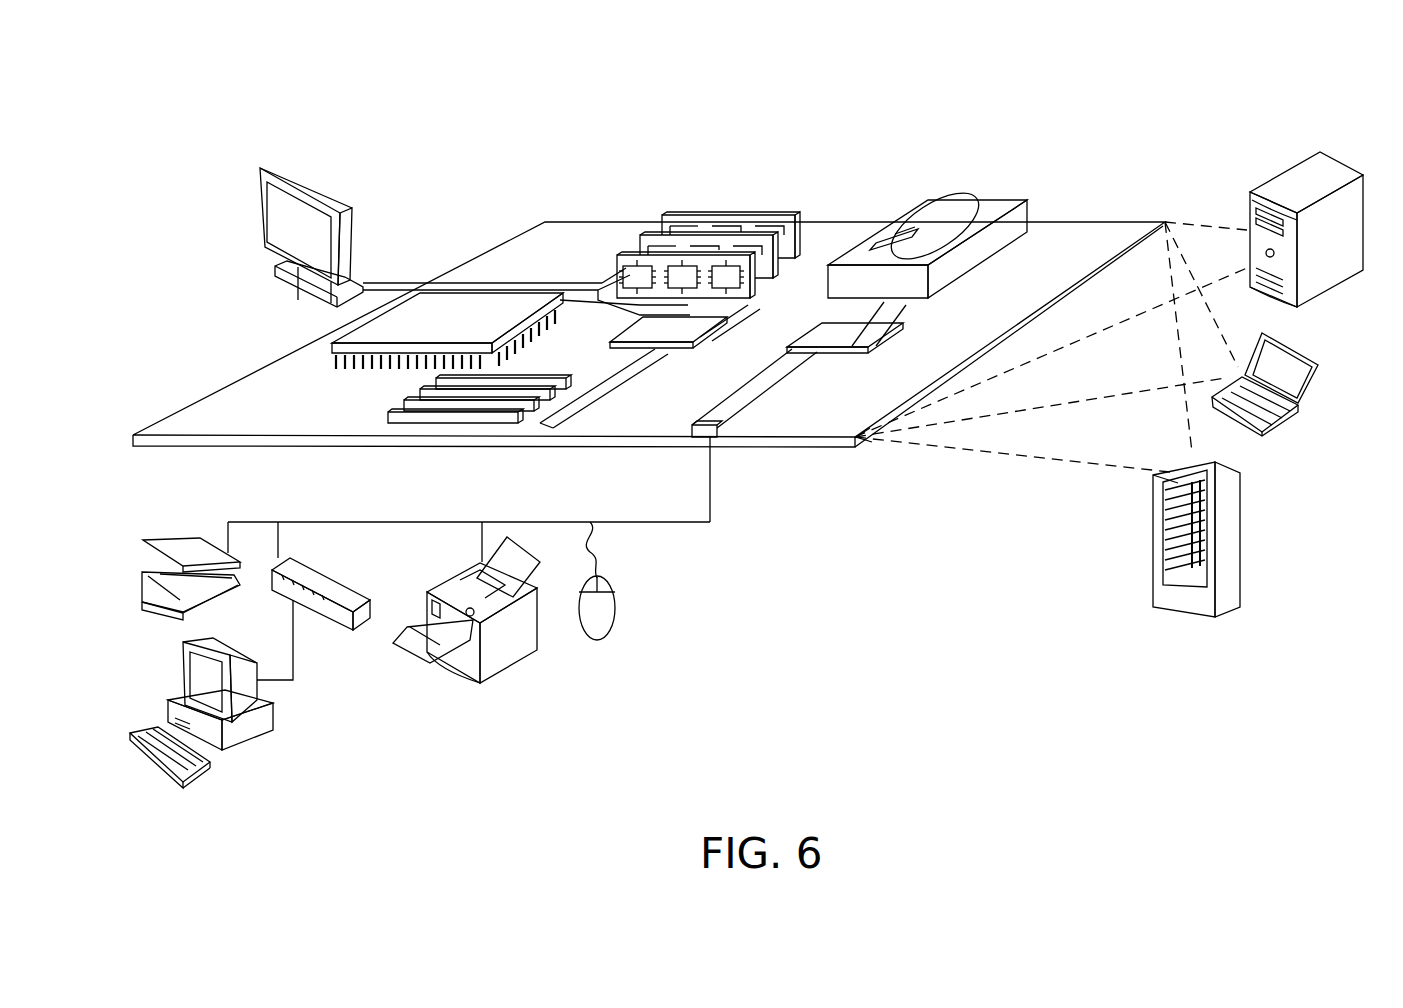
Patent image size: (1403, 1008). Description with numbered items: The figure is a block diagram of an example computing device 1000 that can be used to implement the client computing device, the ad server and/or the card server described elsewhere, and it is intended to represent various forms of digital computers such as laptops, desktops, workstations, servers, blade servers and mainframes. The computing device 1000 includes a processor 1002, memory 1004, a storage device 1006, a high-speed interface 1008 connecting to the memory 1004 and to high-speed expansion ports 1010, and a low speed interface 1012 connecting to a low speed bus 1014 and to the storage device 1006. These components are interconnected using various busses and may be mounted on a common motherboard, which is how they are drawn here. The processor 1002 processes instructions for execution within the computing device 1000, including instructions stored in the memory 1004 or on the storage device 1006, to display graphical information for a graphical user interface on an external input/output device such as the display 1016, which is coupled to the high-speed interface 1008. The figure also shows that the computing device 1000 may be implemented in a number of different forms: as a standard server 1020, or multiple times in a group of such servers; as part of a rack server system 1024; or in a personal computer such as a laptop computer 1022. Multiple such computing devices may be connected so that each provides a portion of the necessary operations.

The computing device 1000 is at (804, 78).
The processor 1002 is at (330, 345).
The memory 1004 is at (728, 214).
The storage device 1006 is at (978, 200).
The high-speed interface 1008 is at (672, 348).
The high-speed expansion ports 1010 is at (386, 412).
The low speed interface 1012 is at (830, 328).
The low speed bus 1014 is at (716, 445).
The display 1016 is at (258, 215).
The standard server 1020 is at (1281, 175).
The laptop computer 1022 is at (1301, 355).
The rack server system 1024 is at (1151, 552).